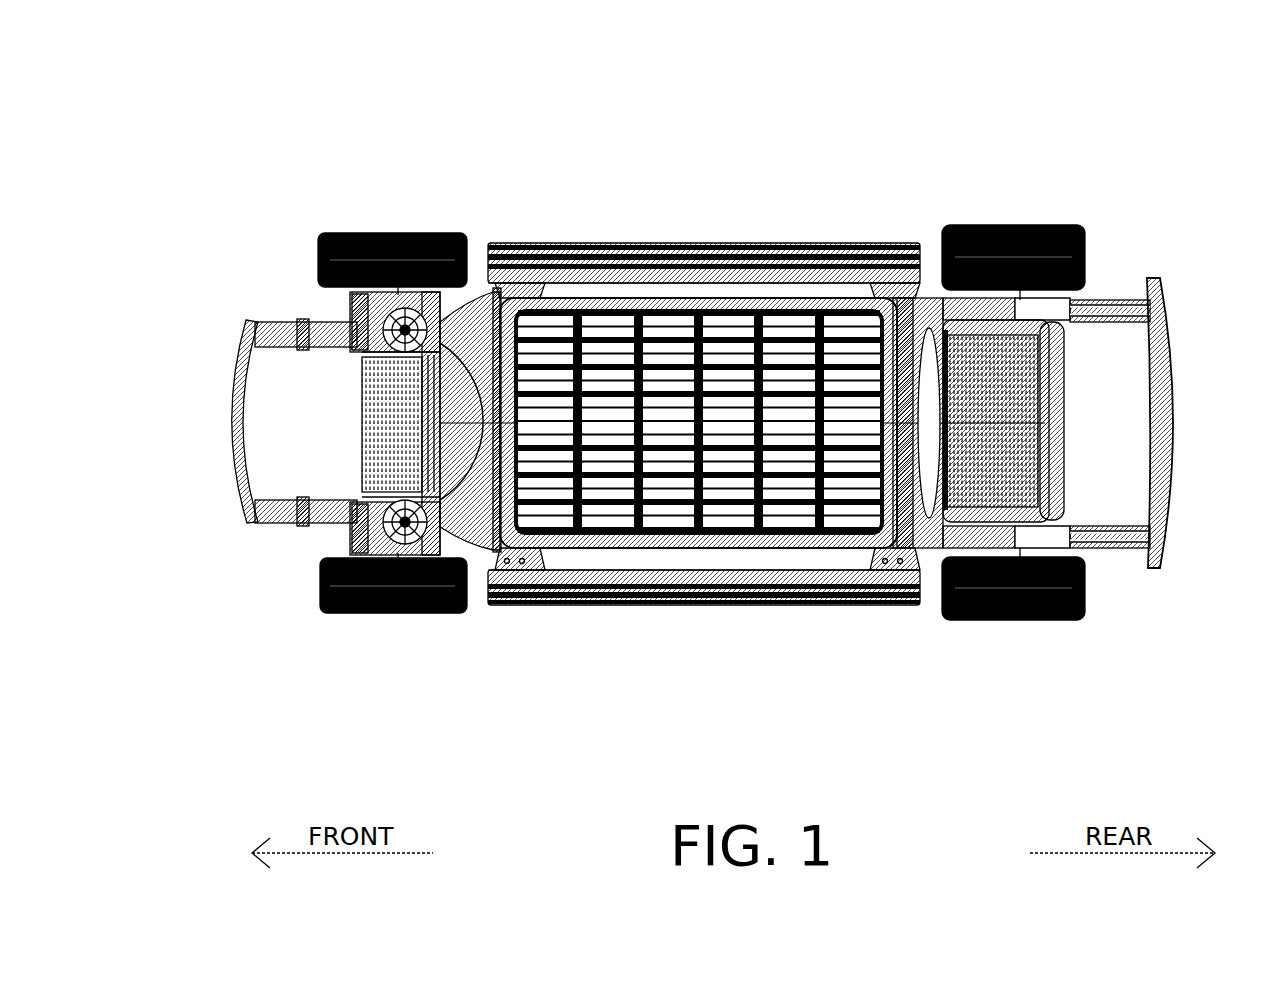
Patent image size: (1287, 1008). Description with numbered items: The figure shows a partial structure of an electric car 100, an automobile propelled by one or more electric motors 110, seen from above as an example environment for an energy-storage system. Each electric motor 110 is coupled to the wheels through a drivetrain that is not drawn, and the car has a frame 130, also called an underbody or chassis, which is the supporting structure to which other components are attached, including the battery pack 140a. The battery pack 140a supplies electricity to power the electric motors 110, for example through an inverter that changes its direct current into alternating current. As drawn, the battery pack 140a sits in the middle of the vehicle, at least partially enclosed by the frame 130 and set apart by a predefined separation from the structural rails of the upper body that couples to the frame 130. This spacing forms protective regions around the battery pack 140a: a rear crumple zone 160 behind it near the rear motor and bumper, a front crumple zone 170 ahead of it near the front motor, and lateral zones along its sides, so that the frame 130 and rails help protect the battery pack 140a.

The electric car 100 is at (363, 121).
The electric motor 110 is at (1040, 478).
The frame 130 is at (886, 298).
The battery pack 140a is at (713, 548).
The rear crumple zone 160 is at (1107, 363).
The front crumple zone 170 is at (350, 468).